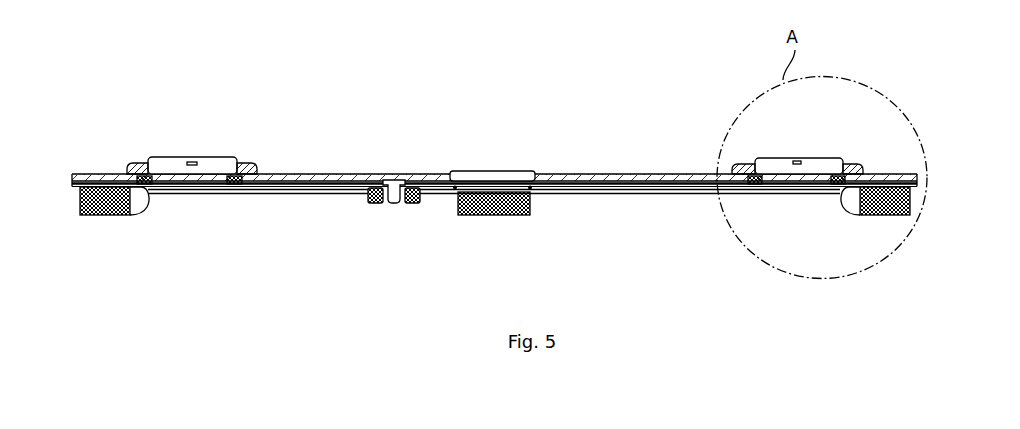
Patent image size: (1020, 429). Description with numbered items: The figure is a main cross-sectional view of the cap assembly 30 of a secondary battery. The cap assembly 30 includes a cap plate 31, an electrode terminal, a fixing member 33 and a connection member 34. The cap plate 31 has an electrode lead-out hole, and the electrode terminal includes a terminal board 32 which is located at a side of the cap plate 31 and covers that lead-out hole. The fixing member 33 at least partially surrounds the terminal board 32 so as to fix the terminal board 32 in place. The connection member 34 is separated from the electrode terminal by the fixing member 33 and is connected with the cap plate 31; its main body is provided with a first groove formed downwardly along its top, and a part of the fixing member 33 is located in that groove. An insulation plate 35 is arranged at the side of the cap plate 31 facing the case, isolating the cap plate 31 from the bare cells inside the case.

The cap assembly 30 is at (430, 126).
The cap plate 31 is at (648, 172).
The terminal board 32 is at (815, 163).
The fixing member 33 is at (852, 160).
The connection member 34 is at (866, 172).
The insulation plate 35 is at (861, 215).